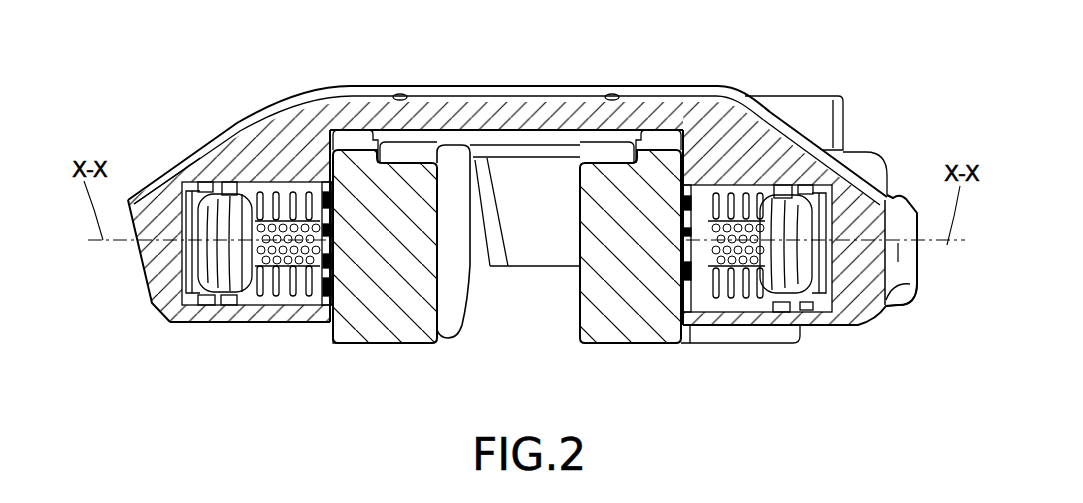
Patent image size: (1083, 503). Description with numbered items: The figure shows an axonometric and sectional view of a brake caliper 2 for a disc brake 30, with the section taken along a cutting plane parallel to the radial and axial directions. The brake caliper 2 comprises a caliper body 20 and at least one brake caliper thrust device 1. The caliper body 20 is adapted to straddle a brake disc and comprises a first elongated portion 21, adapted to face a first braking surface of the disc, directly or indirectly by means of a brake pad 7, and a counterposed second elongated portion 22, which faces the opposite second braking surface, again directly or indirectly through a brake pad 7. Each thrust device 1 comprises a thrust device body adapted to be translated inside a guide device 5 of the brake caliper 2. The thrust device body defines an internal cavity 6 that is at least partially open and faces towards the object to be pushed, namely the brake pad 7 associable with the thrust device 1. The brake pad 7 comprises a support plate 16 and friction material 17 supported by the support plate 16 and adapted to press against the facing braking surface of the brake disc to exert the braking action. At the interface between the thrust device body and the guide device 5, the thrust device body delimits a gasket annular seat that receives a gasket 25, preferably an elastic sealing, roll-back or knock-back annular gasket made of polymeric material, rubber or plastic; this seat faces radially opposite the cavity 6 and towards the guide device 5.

The brake caliper thrust device 1 is at (147, 297).
The brake caliper 2 is at (722, 88).
The guide device 5 is at (245, 188).
The internal cavity 6 is at (203, 281).
The brake pad 7 is at (376, 315).
The support plate 16 is at (435, 343).
The friction material 17 is at (333, 344).
The caliper body 20 is at (877, 317).
The first elongated portion 21 is at (152, 185).
The second elongated portion 22 is at (890, 198).
The gasket 25 is at (237, 190).
The disc brake 30 is at (792, 346).